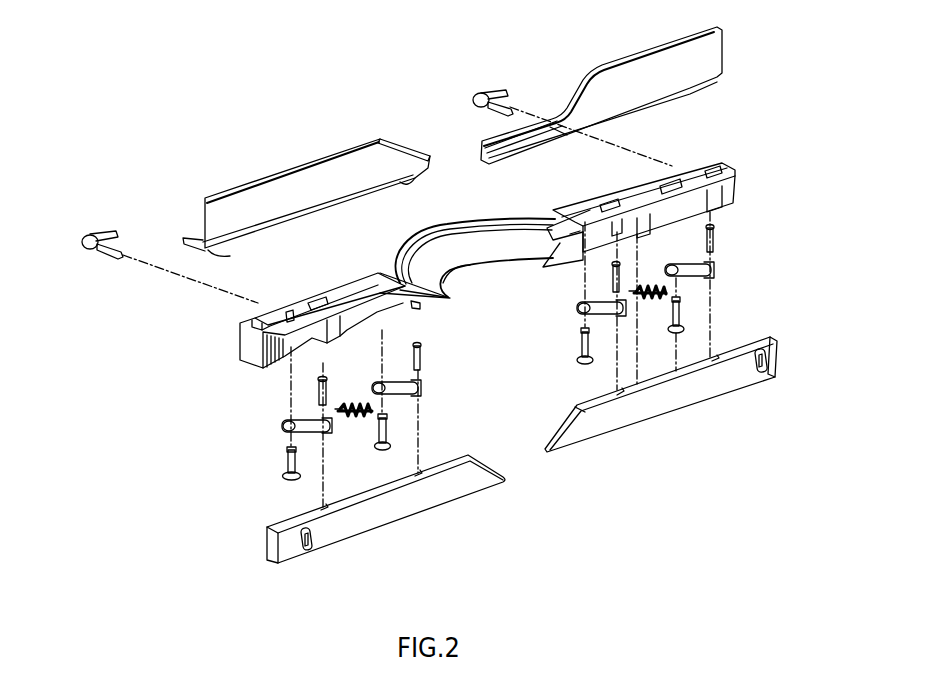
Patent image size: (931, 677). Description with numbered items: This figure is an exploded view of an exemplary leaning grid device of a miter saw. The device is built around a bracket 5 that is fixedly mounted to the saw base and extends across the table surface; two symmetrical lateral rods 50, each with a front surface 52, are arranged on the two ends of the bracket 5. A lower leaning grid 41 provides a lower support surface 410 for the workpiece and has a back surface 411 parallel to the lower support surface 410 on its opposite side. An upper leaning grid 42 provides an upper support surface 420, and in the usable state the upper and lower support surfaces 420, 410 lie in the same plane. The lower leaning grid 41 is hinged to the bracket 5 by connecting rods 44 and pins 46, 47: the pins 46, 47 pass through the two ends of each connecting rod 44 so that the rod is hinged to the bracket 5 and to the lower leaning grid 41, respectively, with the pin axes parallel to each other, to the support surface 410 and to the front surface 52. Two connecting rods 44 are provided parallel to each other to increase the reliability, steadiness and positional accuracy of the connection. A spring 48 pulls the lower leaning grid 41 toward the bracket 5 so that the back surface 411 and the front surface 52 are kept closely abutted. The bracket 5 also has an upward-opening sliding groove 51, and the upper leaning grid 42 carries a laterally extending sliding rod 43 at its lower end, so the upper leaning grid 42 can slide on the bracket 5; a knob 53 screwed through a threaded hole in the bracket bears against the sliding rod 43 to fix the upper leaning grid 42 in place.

The bracket 5 is at (478, 285).
The lower leaning grid 41 is at (480, 426).
The lower support surface 410 is at (367, 520).
The back surface 411 is at (266, 538).
The upper leaning grid 42 is at (442, 129).
The upper support surface 420 is at (687, 52).
The sliding rod 43 is at (228, 250).
The connecting rod 44 is at (280, 425).
The pin 46 is at (317, 395).
The pin 47 is at (283, 463).
The spring 48 is at (357, 420).
The lateral rod 50 is at (308, 309).
The sliding groove 51 is at (338, 296).
The front surface 52 is at (415, 306).
The knob 53 is at (86, 233).